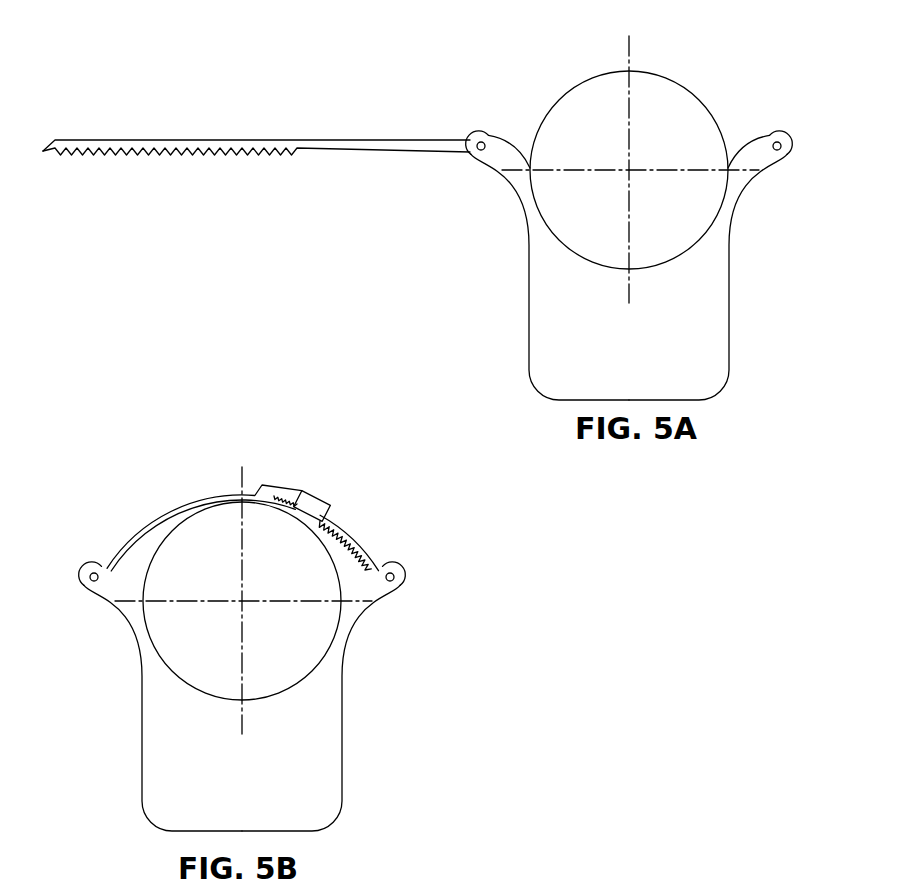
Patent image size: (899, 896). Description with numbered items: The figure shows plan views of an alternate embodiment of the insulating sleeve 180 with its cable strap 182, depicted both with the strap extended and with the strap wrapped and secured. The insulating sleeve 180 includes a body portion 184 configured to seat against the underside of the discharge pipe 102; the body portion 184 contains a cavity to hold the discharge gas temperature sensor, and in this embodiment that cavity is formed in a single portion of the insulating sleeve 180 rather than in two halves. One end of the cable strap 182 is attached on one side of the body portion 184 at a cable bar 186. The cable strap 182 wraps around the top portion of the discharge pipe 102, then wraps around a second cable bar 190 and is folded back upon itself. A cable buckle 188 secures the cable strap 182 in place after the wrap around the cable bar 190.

In FIG. 5A, the discharge pipe 102 is at (613, 72).
In FIG. 5B, the discharge pipe 102 is at (164, 541).
In FIG. 5A, the insulating sleeve 180 is at (729, 338).
In FIG. 5B, the insulating sleeve 180 is at (142, 762).
In FIG. 5A, the cable strap 182 is at (228, 152).
In FIG. 5B, the cable strap 182 is at (262, 484).
In FIG. 5A, the body portion 184 is at (529, 338).
In FIG. 5B, the body portion 184 is at (342, 762).
In FIG. 5A, the cable bar 186 is at (490, 133).
In FIG. 5B, the cable bar 186 is at (82, 573).
In FIG. 5B, the cable buckle 188 is at (315, 495).
In FIG. 5A, the second cable bar 190 is at (781, 143).
In FIG. 5B, the second cable bar 190 is at (404, 577).